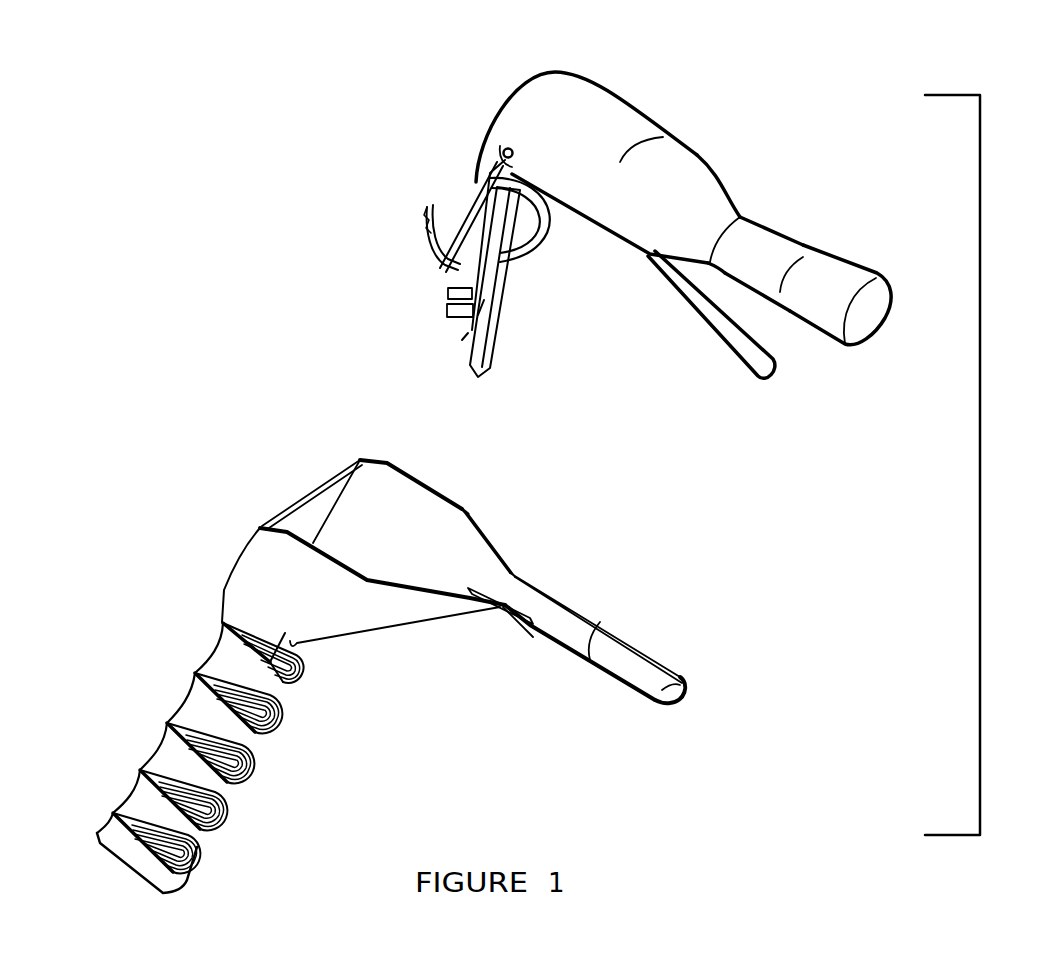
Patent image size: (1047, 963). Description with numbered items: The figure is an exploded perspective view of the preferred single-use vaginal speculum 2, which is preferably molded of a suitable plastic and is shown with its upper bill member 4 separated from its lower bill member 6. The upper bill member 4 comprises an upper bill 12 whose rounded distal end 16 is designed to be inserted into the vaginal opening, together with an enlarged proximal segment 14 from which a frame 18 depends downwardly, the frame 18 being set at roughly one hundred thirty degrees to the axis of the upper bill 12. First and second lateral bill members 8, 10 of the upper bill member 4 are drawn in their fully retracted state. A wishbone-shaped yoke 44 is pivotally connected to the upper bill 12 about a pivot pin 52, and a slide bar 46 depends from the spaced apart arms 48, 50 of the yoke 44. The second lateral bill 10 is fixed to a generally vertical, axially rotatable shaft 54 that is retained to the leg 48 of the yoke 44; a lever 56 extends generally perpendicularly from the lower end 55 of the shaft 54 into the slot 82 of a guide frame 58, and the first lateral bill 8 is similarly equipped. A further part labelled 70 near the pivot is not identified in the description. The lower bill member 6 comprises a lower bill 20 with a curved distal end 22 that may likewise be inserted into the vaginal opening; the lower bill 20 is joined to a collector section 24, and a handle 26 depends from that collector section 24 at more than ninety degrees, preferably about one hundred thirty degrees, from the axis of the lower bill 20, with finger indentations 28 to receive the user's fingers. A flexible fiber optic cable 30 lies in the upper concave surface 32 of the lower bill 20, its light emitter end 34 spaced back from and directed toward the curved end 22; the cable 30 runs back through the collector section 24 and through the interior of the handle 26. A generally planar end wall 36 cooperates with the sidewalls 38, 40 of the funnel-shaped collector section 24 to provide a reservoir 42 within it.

The vaginal speculum 2 is at (980, 528).
The upper bill member 4 is at (697, 155).
The lower bill member 6 is at (497, 540).
The first lateral bill member 8 is at (873, 273).
The second lateral bill member 10 is at (743, 360).
The upper bill 12 is at (767, 250).
The enlarged proximal segment 14 is at (598, 110).
The rounded distal end 16 is at (883, 323).
The frame 18 is at (473, 183).
The lower bill 20 is at (587, 613).
The curved distal end 22 is at (687, 680).
The collector section 24 is at (455, 500).
The handle 26 is at (160, 743).
The finger indentations 28 is at (280, 710).
The fiber optic cable 30 is at (510, 613).
The upper concave surface 32 is at (600, 638).
The light emitter end 34 is at (533, 637).
The end wall 36 is at (282, 513).
The sidewall 38 is at (428, 503).
The sidewall 40 is at (270, 575).
The reservoir 42 is at (415, 533).
The yoke 44 is at (520, 295).
The slide bar 46 is at (503, 332).
The arm 48 is at (497, 223).
The arm 50 is at (552, 220).
The pivot pin 52 is at (505, 152).
The shaft 54 is at (463, 223).
The lower end 55 is at (452, 295).
The lever 56 is at (460, 343).
The guide frame 58 is at (452, 312).
The pivot pin 70 is at (507, 150).
The slot 82 is at (478, 315).